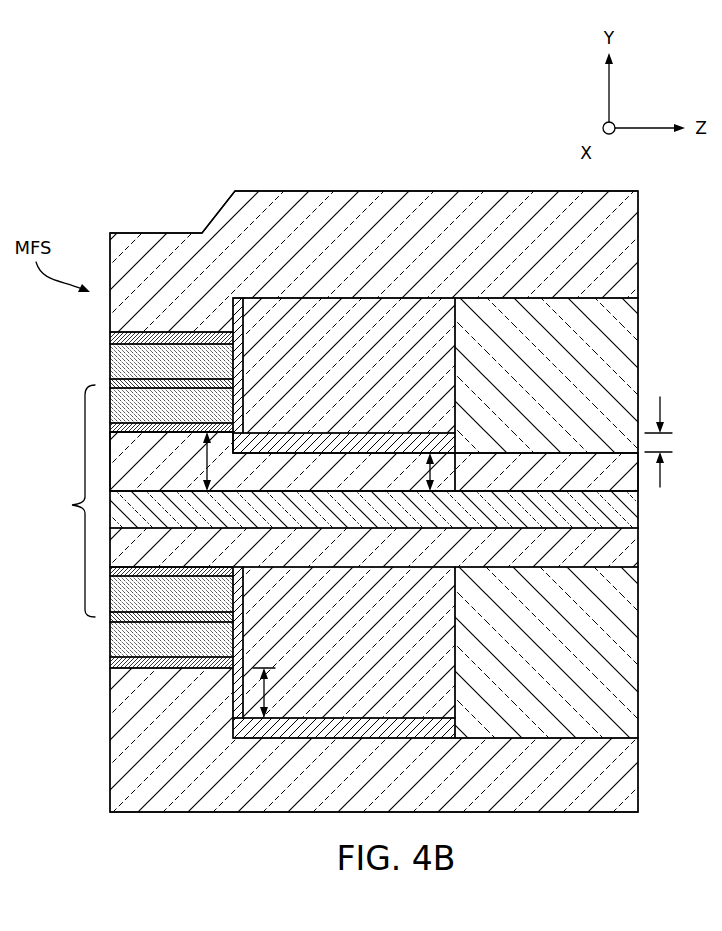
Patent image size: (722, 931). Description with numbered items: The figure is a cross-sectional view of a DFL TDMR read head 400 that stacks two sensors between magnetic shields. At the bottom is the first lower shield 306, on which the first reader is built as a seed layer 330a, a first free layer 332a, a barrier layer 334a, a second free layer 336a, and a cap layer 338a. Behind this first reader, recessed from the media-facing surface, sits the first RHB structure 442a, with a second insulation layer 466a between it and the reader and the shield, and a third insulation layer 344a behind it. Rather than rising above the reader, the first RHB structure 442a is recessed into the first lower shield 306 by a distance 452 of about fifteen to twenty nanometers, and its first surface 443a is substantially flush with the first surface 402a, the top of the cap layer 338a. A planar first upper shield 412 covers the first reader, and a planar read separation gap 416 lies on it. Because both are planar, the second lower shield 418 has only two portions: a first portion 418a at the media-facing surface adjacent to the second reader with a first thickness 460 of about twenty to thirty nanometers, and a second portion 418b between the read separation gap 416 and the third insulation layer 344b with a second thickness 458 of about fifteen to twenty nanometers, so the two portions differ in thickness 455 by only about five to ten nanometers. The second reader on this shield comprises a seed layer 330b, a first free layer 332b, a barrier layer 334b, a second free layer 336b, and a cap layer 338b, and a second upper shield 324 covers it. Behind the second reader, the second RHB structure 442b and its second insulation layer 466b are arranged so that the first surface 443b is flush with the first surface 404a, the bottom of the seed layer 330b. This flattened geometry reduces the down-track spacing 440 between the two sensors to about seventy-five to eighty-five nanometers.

The DFL TDMR read head 400 is at (118, 96).
The second upper shield 324 is at (368, 258).
The second RHB structure 442b is at (308, 360).
The first surface of the second RHB structure 443b is at (308, 432).
The second insulation layer 466b is at (392, 446).
The third insulation layer 344b is at (518, 395).
The cap layer 338b is at (110, 338).
The second free layer 336b is at (150, 371).
The barrier layer 334b is at (110, 383).
The first free layer 332b is at (160, 415).
The seed layer 330b is at (110, 427).
The first surface of the second reader 404a is at (112, 436).
The second lower shield 418 is at (110, 478).
The first portion of the second lower shield 418a is at (130, 468).
The second portion of the second lower shield 418b is at (545, 466).
The first thickness 460 is at (207, 488).
The second thickness 458 is at (433, 470).
The thickness difference 455 is at (665, 443).
The read separation gap (RSG) 416 is at (480, 522).
The first upper shield 412 is at (630, 550).
The first surface of the first reader 402a is at (205, 567).
The down-track spacing (DTS) 440 is at (70, 506).
The cap layer 338a is at (110, 572).
The second free layer 336a is at (110, 594).
The barrier layer 334a is at (110, 617).
The first free layer 332a is at (110, 640).
The seed layer 330a is at (110, 662).
The first RHB structure 442a is at (321, 653).
The first surface of the first RHB structure 443a is at (330, 568).
The second insulation layer 466a is at (415, 728).
The third insulation layer 344a is at (541, 667).
The recess distance 452 is at (268, 695).
The first lower shield 306 is at (311, 782).